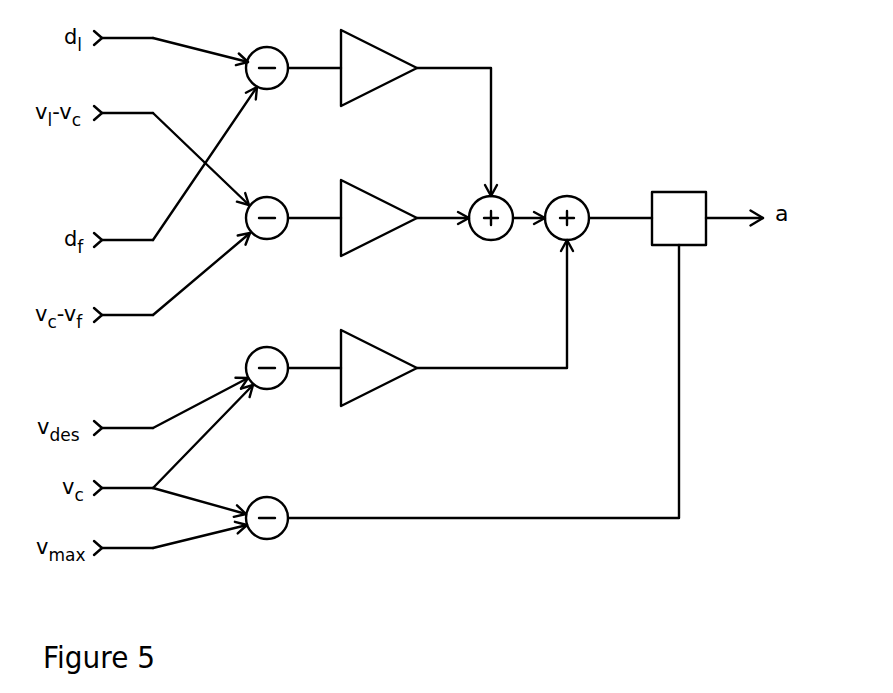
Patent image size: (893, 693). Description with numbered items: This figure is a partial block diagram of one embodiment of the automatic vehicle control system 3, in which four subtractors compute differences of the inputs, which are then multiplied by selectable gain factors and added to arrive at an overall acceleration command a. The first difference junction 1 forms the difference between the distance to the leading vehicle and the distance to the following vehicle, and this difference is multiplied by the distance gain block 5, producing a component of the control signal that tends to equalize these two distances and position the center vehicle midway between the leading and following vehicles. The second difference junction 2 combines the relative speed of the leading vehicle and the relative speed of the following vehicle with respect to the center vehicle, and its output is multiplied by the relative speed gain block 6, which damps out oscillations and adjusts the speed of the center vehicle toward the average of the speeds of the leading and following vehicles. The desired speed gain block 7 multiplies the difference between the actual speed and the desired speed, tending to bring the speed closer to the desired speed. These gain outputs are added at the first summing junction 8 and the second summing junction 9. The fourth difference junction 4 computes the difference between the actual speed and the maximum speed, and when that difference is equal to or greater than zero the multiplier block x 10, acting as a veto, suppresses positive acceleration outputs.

The first difference junction (d_l minus d_f) 1 is at (267, 68).
The second difference junction (v_l-v_c minus v_c-v_f) 2 is at (267, 218).
The automatic vehicle control system 3 is at (267, 368).
The fourth difference junction (v_c minus v_max) 4 is at (267, 518).
The gain block k_d 5 is at (379, 68).
The gain block k_v 6 is at (379, 218).
The gain block k_c 7 is at (379, 368).
The first summing junction 8 is at (491, 218).
The second summing junction 9 is at (567, 218).
The multiplier block x 10 is at (679, 218).